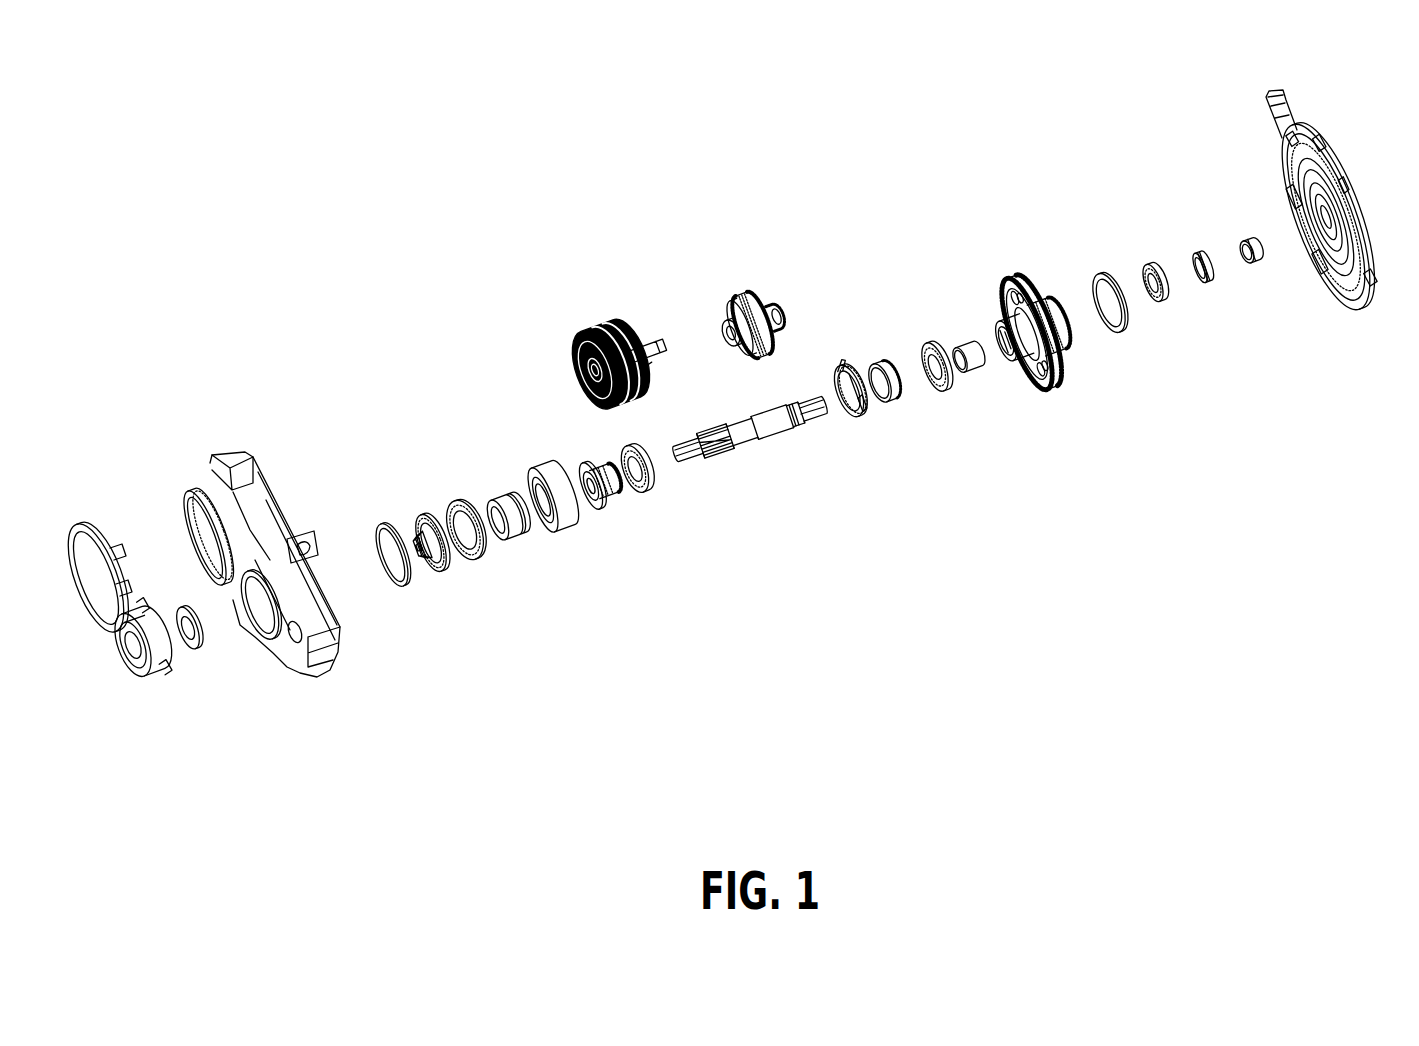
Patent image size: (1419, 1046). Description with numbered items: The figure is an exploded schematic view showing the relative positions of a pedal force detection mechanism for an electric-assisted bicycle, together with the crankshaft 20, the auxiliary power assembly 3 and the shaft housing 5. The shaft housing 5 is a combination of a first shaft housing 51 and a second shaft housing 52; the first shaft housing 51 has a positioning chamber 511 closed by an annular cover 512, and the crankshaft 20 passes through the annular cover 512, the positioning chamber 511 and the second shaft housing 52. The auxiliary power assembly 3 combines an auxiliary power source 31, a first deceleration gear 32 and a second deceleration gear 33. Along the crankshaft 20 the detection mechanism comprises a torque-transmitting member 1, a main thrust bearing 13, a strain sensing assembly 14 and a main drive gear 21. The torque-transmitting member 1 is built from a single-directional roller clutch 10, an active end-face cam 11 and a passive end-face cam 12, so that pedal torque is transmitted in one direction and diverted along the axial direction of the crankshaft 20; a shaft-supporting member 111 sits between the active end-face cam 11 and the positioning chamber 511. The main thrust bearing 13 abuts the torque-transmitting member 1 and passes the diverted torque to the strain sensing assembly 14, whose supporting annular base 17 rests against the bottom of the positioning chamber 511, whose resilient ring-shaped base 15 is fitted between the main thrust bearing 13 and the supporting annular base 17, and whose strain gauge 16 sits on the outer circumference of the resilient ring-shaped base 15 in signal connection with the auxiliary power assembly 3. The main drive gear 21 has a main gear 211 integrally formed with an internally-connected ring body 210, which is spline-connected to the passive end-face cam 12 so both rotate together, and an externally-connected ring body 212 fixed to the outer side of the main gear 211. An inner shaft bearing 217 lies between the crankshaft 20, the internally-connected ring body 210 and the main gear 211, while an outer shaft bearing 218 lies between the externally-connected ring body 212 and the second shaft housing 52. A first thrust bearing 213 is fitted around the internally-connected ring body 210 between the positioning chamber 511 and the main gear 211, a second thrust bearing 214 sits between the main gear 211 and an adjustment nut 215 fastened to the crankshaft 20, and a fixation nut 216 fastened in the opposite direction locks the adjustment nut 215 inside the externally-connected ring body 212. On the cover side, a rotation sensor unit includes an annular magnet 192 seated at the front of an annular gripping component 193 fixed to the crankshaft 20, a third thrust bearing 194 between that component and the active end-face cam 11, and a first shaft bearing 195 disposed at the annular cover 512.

The torque-transmitting member 1 is at (537, 640).
The auxiliary power assembly 3 is at (530, 274).
The shaft housing 5 is at (202, 337).
The single-directional roller clutch 10 is at (513, 541).
The active end-face cam 11 is at (569, 519).
The shaft-supporting member 111 is at (562, 476).
The passive end-face cam 12 is at (608, 500).
The main thrust bearing 13 is at (650, 482).
The strain sensing assembly 14 is at (938, 503).
The resilient ring-shaped base 15 is at (858, 414).
The strain gauge 16 is at (838, 372).
The supporting annular base 17 is at (893, 404).
The annular magnet 192 is at (395, 588).
The annular gripping component 193 is at (438, 570).
The third thrust bearing 194 is at (472, 560).
The first shaft bearing 195 is at (192, 650).
The crankshaft 20 is at (742, 448).
The main drive gear 21 is at (962, 518).
The internally-connected ring body 210 is at (1025, 346).
The main gear 211 is at (1058, 388).
The externally-connected ring body 212 is at (1070, 343).
The first thrust bearing 213 is at (944, 394).
The second thrust bearing 214 is at (1167, 301).
The adjustment nut 215 is at (1210, 284).
The fixation nut 216 is at (1262, 266).
The inner shaft bearing 217 is at (980, 360).
The outer shaft bearing 218 is at (1125, 331).
The auxiliary power source 31 is at (597, 320).
The first deceleration gear 32 is at (737, 295).
The second deceleration gear 33 is at (772, 306).
The first shaft housing 51 is at (258, 604).
The positioning chamber 511 is at (253, 608).
The annular cover 512 is at (143, 681).
The second shaft housing 52 is at (1357, 306).